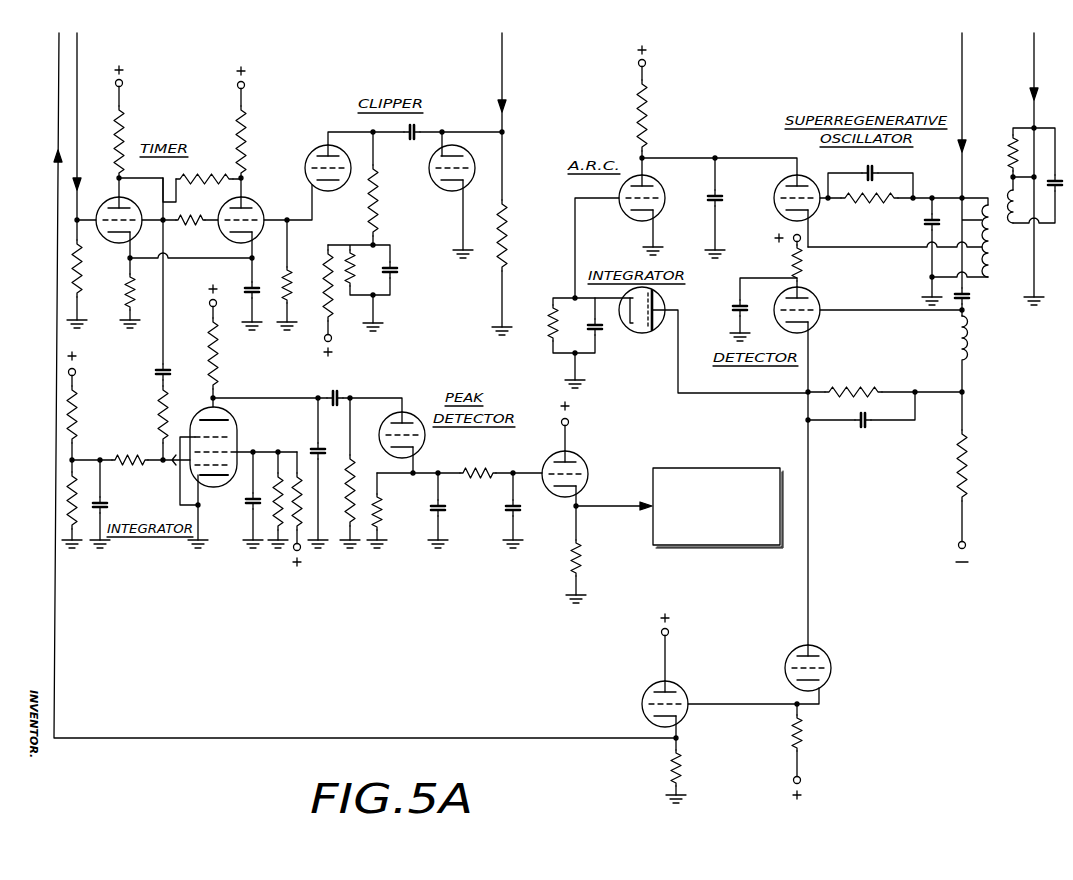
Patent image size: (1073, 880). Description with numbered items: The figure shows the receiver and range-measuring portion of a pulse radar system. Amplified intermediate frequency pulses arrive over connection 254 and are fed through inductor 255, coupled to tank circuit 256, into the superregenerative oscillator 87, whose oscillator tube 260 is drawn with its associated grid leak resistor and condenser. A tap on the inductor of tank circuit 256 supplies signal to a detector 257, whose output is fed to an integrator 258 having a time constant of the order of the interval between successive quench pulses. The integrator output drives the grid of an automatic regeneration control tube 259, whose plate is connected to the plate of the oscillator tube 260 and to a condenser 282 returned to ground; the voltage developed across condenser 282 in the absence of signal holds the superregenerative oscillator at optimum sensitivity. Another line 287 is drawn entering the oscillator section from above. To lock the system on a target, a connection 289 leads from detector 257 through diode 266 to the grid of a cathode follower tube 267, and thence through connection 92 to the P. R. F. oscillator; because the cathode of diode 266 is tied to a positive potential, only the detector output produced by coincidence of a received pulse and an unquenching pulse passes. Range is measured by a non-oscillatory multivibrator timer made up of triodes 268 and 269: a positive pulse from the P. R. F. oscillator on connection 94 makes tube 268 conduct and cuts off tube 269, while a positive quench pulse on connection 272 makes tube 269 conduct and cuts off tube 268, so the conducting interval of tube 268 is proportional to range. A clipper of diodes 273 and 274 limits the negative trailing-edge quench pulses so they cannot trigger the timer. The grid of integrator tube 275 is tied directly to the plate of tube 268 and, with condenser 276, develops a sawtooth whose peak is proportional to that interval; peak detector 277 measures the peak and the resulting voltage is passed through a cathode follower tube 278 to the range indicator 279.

The connection 92 is at (58, 103).
The connection 94 is at (78, 98).
The triode 268 is at (113, 240).
The triode 269 is at (250, 199).
The diode 274 is at (306, 153).
The diode 273 is at (434, 188).
The connection 272 is at (506, 83).
The automatic regeneration control tube 259 is at (657, 216).
The condenser 282 is at (718, 197).
The oscillator tube 260 is at (781, 213).
The superregenerative oscillator 87 is at (875, 236).
The conductor 287 is at (958, 78).
The connection 254 is at (1031, 80).
The inductor 255 is at (1004, 196).
The tank circuit 256 is at (965, 256).
The integrator 258 is at (640, 359).
The detector 257 is at (860, 356).
The integrator tube 275 is at (238, 420).
The condenser 276 is at (313, 446).
The peak detector 277 is at (470, 454).
The amplifier tube 278 is at (579, 457).
The range indicator 279 is at (692, 468).
The connection 289 is at (809, 559).
The cathode follower tube 267 is at (685, 690).
The diode 266 is at (832, 670).